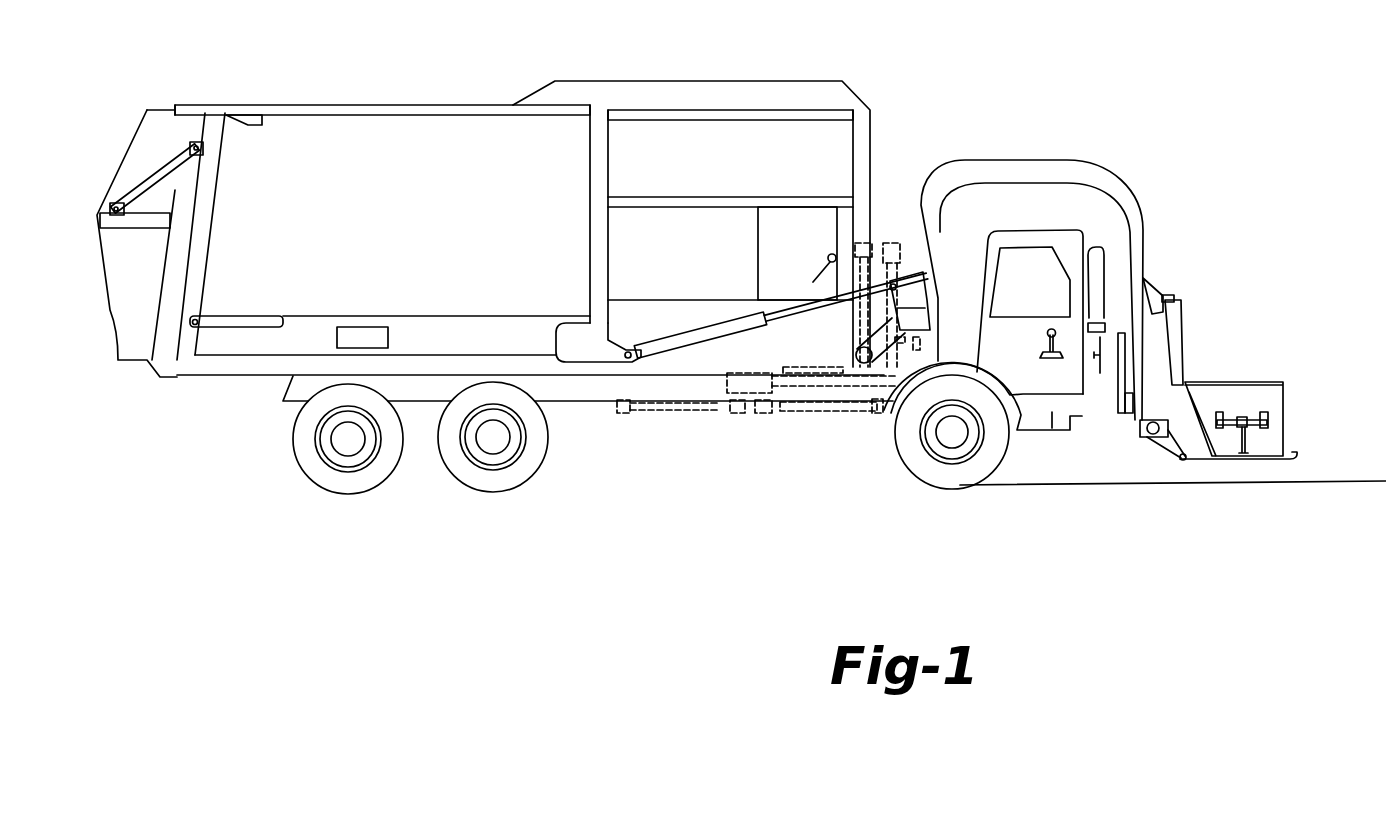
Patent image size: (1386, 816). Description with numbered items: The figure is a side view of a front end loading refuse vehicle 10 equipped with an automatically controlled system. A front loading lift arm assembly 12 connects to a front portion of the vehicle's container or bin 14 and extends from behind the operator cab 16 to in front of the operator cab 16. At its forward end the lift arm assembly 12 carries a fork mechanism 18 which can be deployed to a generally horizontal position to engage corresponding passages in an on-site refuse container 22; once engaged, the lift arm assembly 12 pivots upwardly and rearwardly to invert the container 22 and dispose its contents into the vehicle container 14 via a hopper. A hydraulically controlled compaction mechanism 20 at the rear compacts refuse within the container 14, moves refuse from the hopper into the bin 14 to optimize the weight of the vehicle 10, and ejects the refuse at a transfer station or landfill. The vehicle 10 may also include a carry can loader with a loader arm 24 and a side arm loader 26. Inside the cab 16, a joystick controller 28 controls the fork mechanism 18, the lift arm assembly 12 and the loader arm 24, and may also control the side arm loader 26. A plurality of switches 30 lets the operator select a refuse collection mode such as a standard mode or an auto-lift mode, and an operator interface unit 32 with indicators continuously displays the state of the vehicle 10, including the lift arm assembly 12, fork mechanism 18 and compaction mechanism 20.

The front end loading refuse vehicle 10 is at (428, 97).
The front loading lift arm assembly 12 is at (1057, 158).
The container or bin 14 is at (726, 80).
The operator cab 16 is at (1052, 428).
The fork mechanism 18 is at (1297, 456).
The compaction mechanism 20 is at (163, 170).
The on-site refuse container 22 is at (1270, 375).
The loader arm 24 is at (1232, 432).
The side arm loader 26 is at (797, 412).
The joystick controller 28 is at (1030, 350).
The plurality of switches 30 is at (1098, 375).
The operator interface unit (OIU) 32 is at (1107, 327).